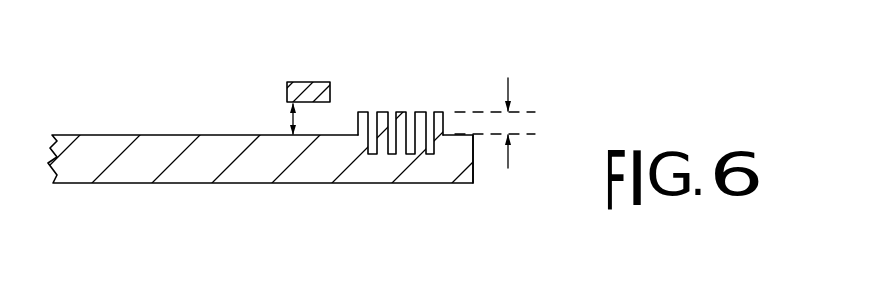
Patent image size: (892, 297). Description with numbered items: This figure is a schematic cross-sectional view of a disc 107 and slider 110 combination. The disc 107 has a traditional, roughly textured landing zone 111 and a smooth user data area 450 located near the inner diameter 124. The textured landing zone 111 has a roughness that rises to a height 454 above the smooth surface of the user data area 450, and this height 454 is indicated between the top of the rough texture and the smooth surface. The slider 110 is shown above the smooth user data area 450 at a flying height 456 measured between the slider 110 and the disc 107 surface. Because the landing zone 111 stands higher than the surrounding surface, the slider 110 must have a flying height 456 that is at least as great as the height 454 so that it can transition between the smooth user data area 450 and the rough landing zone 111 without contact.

The user data area 450 is at (282, 139).
The flying height 456 is at (291, 117).
The slider 110 is at (314, 82).
The textured landing zone 111 is at (399, 98).
The height 454 is at (510, 84).
The inner diameter 124 is at (474, 163).
The disc 107 is at (197, 165).